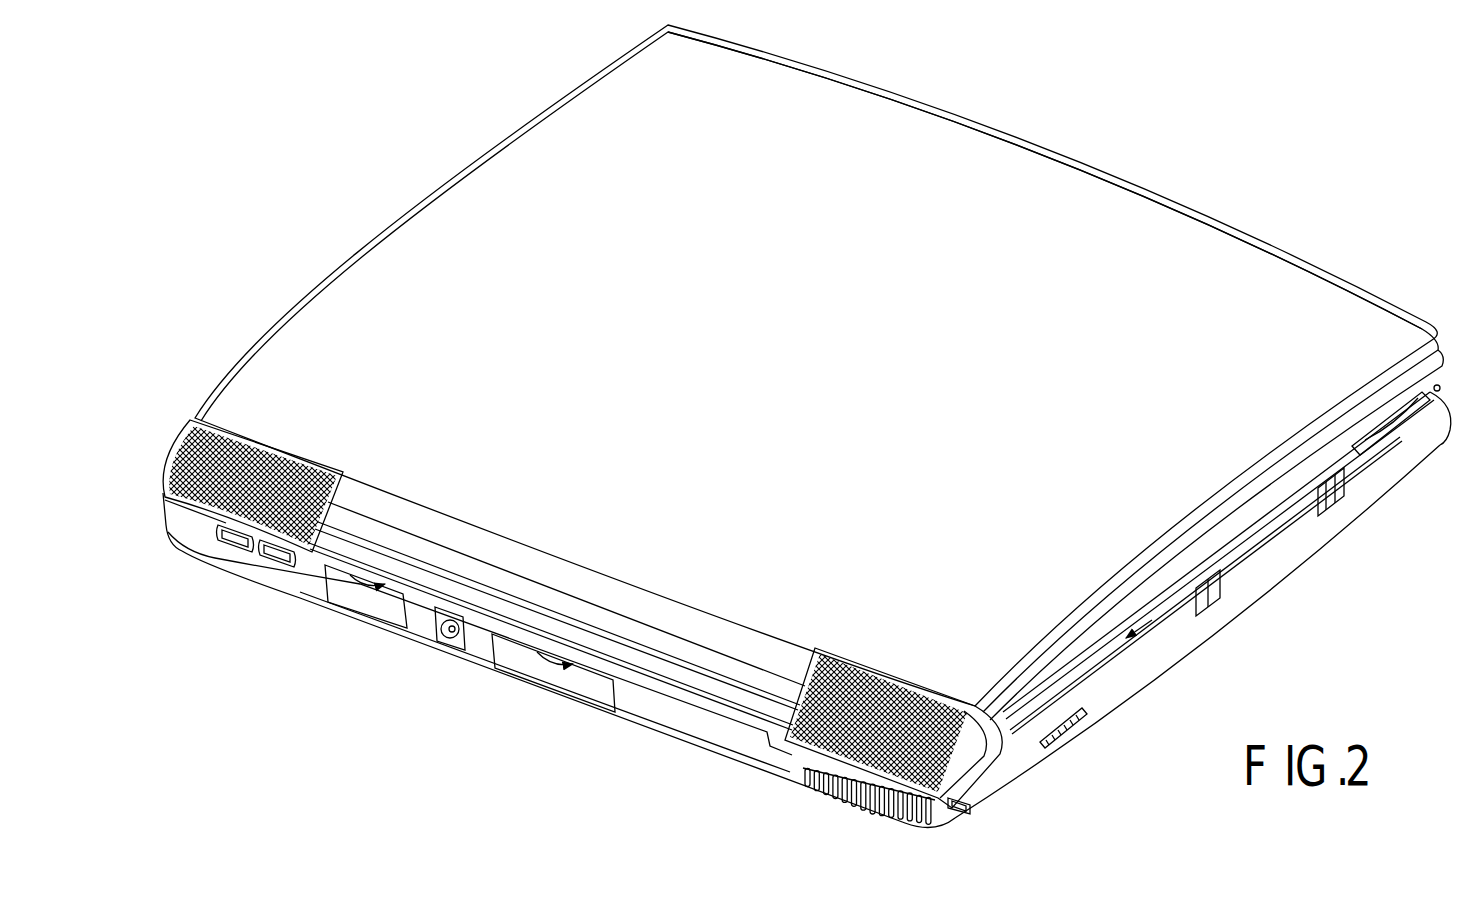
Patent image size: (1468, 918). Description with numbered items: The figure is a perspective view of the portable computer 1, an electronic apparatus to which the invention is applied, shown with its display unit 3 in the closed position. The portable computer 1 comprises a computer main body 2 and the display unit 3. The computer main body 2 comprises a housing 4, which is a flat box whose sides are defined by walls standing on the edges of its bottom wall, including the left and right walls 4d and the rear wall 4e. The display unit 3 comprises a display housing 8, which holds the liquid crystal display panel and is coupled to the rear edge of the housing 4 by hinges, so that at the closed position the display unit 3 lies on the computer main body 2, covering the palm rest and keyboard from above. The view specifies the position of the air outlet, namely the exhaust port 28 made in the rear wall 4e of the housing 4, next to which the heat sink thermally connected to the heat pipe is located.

The portable computer 1 is at (1126, 142).
The computer main body 2 is at (1112, 718).
The display unit 3 is at (393, 216).
The housing 4 is at (410, 637).
The left and right walls 4d is at (1215, 588).
The rear wall 4e is at (686, 722).
The display housing 8 is at (1258, 258).
The exhaust port 28 is at (845, 812).